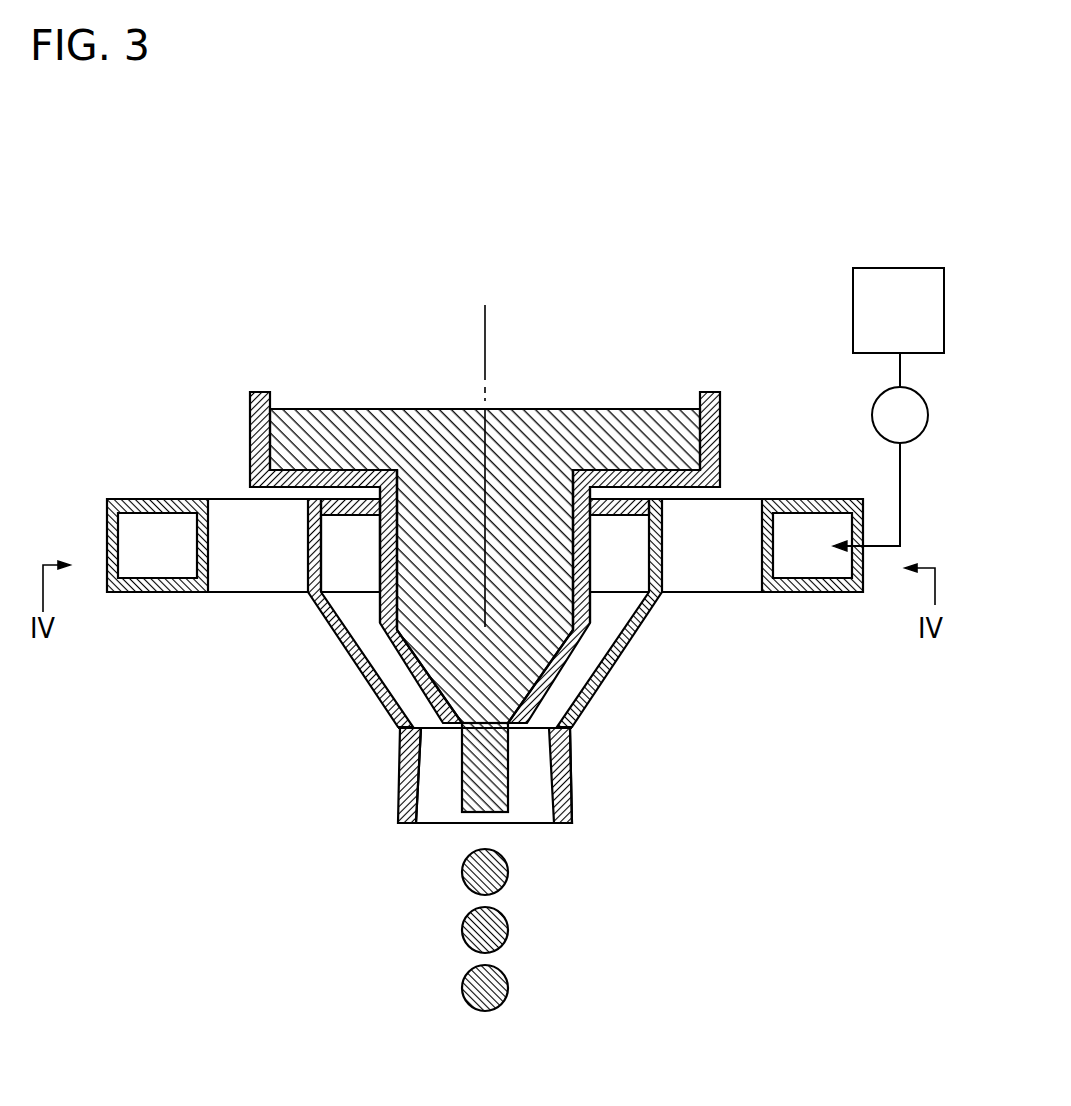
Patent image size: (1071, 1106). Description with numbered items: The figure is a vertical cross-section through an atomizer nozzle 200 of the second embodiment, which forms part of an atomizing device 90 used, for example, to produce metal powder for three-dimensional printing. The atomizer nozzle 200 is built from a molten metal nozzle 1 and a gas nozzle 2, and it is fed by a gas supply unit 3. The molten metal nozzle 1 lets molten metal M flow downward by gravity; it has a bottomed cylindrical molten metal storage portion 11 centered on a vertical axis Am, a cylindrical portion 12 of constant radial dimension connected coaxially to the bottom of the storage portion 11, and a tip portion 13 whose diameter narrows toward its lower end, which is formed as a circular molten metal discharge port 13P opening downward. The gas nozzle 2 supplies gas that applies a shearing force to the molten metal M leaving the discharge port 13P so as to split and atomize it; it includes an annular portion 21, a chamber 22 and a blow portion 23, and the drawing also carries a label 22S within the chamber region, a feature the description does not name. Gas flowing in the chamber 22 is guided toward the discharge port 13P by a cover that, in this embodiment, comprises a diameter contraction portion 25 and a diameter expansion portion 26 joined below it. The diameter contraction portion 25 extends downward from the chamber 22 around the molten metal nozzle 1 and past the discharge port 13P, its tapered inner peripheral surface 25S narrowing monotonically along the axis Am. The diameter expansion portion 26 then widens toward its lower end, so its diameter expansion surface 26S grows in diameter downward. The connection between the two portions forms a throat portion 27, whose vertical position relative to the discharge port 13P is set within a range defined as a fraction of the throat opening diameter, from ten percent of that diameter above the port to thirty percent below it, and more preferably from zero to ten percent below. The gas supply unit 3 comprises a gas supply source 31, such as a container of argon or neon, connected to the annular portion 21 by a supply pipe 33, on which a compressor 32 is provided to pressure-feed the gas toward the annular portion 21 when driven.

The atomizing device 90 is at (130, 243).
The atomizer nozzle 200 is at (336, 315).
The molten metal nozzle 1 is at (611, 352).
The molten metal storage portion 11 is at (258, 392).
The cylindrical portion 12 is at (380, 542).
The tip portion 13 is at (470, 700).
The molten metal discharge port 13P is at (458, 720).
The molten metal M is at (553, 409).
The axis Am is at (485, 305).
The gas nozzle 2 is at (762, 815).
The annular portion 21 is at (823, 590).
The chamber 22 is at (657, 557).
The guide space 22S is at (345, 615).
The blow portion 23 is at (243, 590).
The diameter contraction portion 25 is at (617, 663).
The tapered inner peripheral surface 25S is at (405, 728).
The diameter expansion portion 26 is at (573, 797).
The diameter expansion surface 26S is at (420, 826).
The throat portion 27 is at (567, 732).
The gas supply unit 3 is at (796, 245).
The gas supply source 31 is at (900, 268).
The compressor 32 is at (876, 402).
The supply pipe 33 is at (903, 480).